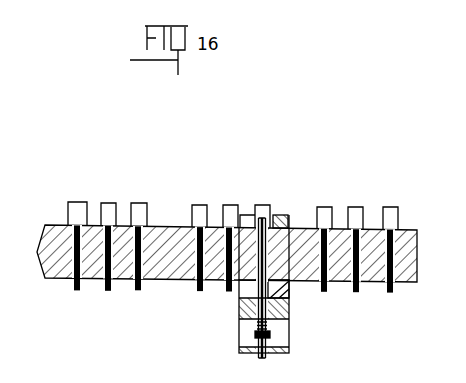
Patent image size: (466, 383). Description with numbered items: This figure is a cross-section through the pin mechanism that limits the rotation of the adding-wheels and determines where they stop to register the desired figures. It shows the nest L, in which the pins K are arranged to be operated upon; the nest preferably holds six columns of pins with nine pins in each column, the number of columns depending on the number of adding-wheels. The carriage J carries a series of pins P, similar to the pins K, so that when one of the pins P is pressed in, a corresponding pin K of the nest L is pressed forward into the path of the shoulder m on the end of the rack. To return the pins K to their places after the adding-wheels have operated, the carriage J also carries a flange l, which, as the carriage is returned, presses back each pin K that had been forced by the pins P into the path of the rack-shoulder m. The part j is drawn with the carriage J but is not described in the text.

The nest L is at (420, 255).
The pins K is at (110, 289).
The shoulder m is at (87, 201).
The carriage J is at (289, 220).
The bracket piece j is at (288, 286).
The flange l is at (287, 215).
The pins P is at (239, 300).